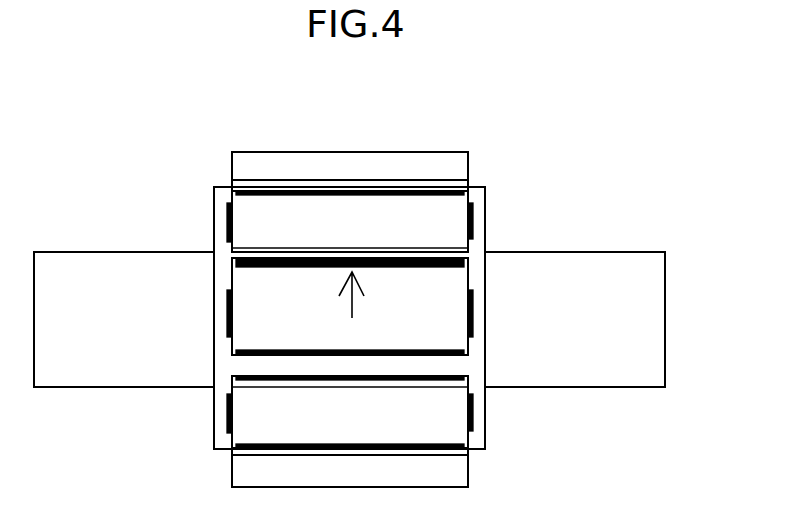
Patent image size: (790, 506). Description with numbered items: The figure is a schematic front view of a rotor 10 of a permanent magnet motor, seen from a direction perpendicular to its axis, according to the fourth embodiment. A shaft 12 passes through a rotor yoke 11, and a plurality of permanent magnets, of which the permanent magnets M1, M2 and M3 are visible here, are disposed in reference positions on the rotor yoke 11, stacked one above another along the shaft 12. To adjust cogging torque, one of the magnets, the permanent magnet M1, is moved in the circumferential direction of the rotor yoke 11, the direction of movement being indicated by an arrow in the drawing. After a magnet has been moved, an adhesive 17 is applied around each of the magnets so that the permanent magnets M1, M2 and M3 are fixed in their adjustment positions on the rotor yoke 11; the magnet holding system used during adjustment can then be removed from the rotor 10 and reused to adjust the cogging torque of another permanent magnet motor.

The rotor 10 is at (567, 114).
The rotor yoke 11 is at (463, 363).
The shaft 12 is at (620, 270).
The adhesive 17 is at (228, 320).
The permanent magnet M1 is at (455, 273).
The permanent magnet M2 is at (385, 218).
The permanent magnet M3 is at (305, 162).